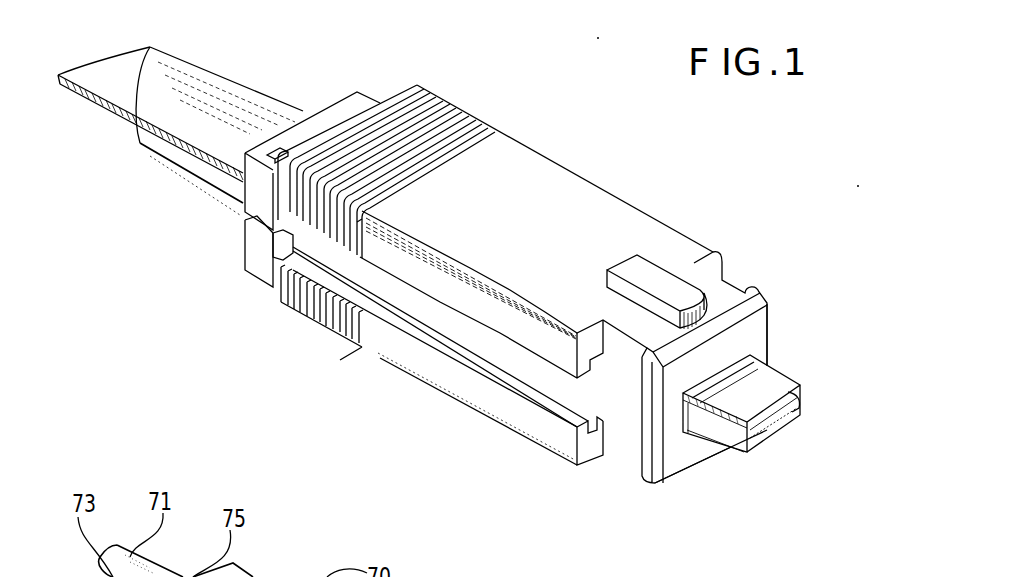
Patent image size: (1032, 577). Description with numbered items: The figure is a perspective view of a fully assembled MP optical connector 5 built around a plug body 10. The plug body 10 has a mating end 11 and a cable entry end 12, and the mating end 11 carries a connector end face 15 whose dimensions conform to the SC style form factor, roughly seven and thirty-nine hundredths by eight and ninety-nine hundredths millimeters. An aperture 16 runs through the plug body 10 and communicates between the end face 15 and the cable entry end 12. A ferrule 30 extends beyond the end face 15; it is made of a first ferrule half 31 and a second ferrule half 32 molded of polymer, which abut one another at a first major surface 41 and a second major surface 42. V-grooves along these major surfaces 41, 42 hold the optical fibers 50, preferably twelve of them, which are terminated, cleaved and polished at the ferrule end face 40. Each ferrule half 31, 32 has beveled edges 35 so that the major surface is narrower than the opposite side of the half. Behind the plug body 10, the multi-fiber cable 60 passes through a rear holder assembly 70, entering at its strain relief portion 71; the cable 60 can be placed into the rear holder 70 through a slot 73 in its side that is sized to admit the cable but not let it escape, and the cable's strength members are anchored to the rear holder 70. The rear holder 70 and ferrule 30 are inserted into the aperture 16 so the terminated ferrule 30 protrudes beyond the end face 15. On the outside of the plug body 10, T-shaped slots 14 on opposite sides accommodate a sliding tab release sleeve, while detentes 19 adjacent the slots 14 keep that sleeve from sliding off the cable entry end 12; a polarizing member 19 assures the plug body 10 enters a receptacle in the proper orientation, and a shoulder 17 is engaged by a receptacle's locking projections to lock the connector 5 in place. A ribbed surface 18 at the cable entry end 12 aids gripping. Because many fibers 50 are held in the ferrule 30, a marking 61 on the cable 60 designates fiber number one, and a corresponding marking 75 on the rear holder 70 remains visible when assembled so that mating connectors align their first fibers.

The MP optical connector 5 is at (449, 413).
The plug body 10 is at (562, 146).
The mating end 11 is at (742, 267).
The cable entry end 12 is at (387, 90).
The T-shaped slots 14 is at (592, 423).
The connector end face 15 is at (755, 325).
The aperture 16 is at (697, 447).
The shoulder 17 is at (640, 443).
The ribbed surface 18 is at (293, 308).
The detente / polarizing member 19 is at (657, 277).
The ferrule 30 is at (825, 399).
The first ferrule half 31 is at (788, 370).
The second ferrule half 32 is at (787, 433).
The beveled edges 35 is at (735, 440).
The ferrule end face 40 is at (822, 395).
The first major surface 41 is at (752, 437).
The second major surface 42 is at (802, 410).
The optical fibers 50 is at (753, 428).
The cable 60 is at (140, 92).
The marking 61 is at (140, 73).
The rear holder assembly 70 is at (260, 195).
The strain relief portion 71 is at (228, 95).
The slot 73 is at (248, 222).
The marking 75 is at (283, 152).